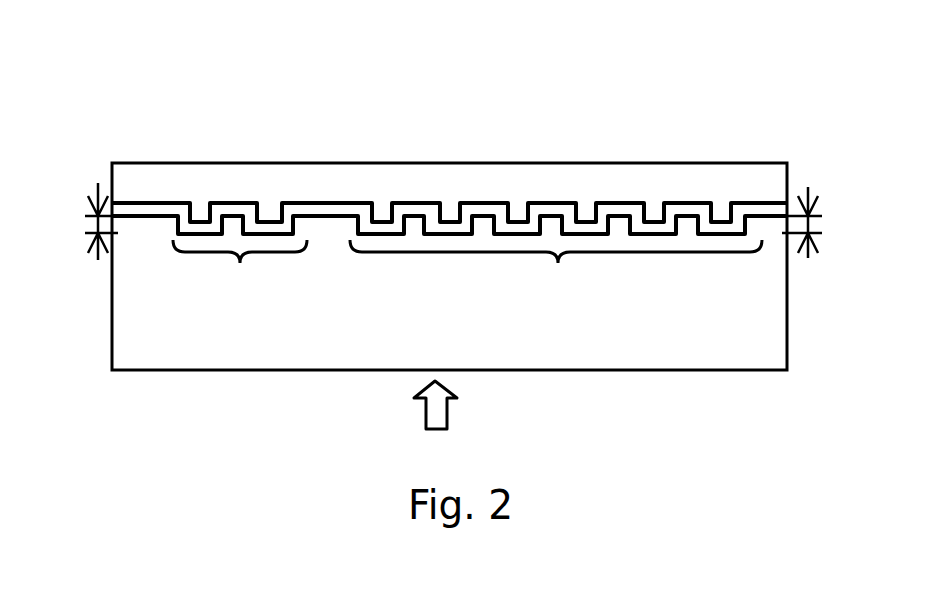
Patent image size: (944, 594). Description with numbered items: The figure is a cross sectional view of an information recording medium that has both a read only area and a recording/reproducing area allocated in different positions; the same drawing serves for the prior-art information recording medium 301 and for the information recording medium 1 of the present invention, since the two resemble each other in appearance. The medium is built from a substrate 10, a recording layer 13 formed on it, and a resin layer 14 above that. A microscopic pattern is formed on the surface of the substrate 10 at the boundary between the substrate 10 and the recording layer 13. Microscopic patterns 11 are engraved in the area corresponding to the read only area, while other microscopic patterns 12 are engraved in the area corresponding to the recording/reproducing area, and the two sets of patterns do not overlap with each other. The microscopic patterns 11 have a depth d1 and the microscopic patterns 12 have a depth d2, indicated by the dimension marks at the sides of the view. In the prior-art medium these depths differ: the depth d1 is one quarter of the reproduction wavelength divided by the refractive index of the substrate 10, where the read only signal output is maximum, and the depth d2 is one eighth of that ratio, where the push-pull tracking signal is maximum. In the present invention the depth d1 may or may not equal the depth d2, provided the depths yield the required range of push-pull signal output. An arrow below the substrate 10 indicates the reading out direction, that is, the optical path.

The information recording medium 1 is at (602, 110).
The information recording medium 301 is at (670, 110).
The substrate 10 is at (758, 343).
The microscopic patterns 11 is at (252, 293).
The microscopic patterns 12 is at (573, 295).
The recording layer 13 is at (335, 203).
The resin layer 14 is at (404, 183).
The depth of the microscopic patterns in the read only area d1 is at (82, 221).
The depth of the microscopic patterns in the recording/reproducing area d2 is at (820, 222).